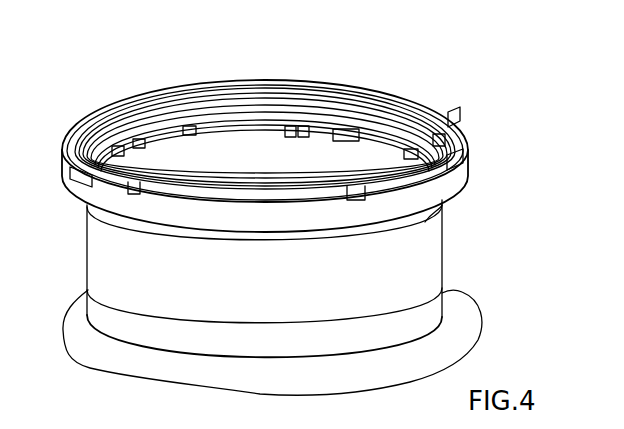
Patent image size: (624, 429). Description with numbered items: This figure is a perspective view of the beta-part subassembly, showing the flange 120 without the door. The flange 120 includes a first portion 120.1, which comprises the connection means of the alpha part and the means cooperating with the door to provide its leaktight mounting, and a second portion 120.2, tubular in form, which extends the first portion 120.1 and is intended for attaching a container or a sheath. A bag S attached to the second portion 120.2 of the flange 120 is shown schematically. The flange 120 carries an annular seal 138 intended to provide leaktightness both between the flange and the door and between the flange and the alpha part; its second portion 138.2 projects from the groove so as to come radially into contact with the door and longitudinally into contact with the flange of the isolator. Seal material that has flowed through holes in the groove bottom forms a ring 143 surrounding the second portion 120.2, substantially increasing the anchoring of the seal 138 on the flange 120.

The seal 138 is at (265, 112).
The second portion of the seal 138.2 is at (374, 96).
The first portion of the flange 120.1 is at (465, 128).
The flange 120 is at (307, 220).
The ring 143 is at (425, 222).
The second portion of the flange 120.2 is at (444, 277).
The bag S is at (480, 343).